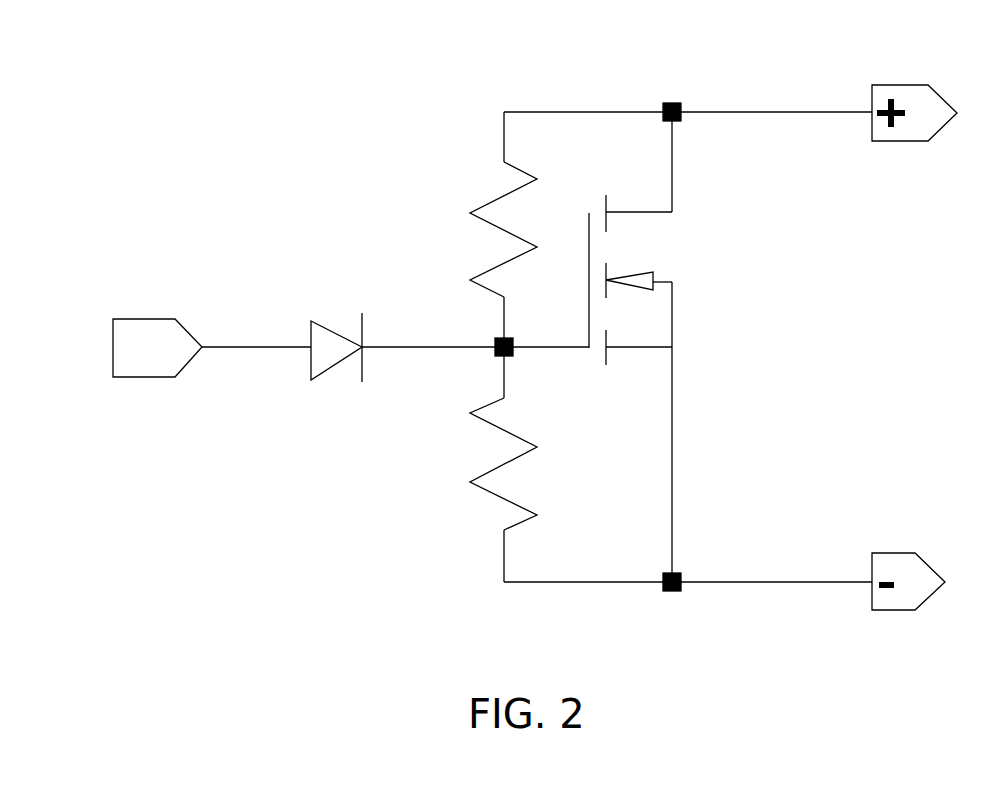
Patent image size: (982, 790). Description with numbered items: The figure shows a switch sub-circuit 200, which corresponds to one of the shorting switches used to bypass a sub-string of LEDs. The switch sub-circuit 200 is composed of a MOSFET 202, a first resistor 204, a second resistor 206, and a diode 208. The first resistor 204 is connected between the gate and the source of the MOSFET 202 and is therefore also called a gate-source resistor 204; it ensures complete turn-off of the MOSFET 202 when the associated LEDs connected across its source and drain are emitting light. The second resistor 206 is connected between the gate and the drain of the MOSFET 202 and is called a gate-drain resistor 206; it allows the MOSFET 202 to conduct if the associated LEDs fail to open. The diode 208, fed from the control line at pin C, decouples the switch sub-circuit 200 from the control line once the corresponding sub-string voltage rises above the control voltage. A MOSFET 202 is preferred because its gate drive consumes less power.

The switch sub-circuit 200 is at (732, 58).
The MOSFET 202 is at (670, 261).
The first resistor 204 is at (492, 500).
The second resistor 206 is at (461, 202).
The diode 208 is at (309, 312).